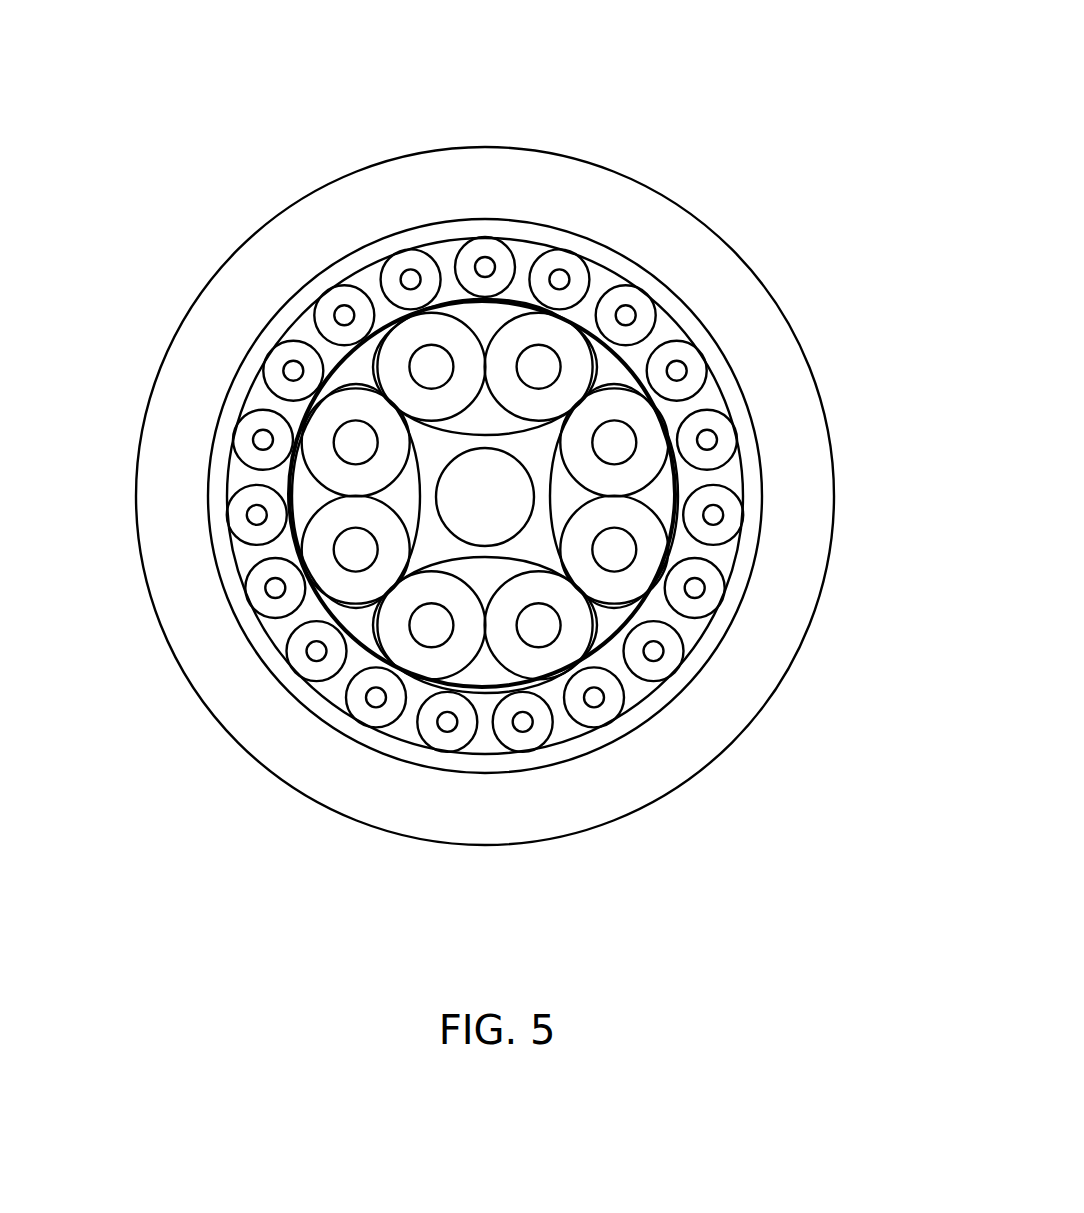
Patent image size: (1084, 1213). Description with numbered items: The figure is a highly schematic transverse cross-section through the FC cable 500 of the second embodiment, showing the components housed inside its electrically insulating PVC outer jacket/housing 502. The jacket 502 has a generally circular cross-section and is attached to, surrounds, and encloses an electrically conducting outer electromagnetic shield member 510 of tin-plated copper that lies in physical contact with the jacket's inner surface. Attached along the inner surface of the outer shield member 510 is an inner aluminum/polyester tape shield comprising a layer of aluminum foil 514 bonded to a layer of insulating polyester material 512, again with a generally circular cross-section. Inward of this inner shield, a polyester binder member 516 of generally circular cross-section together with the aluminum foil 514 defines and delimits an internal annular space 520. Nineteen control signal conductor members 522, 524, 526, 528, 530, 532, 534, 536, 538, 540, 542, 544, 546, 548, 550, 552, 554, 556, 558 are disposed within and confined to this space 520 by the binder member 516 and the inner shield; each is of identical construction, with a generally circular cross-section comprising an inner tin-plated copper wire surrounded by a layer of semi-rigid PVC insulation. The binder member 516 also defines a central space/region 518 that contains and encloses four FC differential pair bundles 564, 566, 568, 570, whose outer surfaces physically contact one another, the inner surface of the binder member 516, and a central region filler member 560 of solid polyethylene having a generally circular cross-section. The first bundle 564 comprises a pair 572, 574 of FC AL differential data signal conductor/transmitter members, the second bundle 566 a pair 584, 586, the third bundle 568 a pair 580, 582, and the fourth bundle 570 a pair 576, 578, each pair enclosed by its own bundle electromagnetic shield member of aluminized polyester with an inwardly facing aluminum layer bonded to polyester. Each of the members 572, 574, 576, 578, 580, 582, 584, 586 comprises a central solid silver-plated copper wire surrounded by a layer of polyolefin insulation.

The cable 500 is at (660, 46).
The outer jacket/housing 502 is at (593, 160).
The outer electromagnetic shield member 510 is at (660, 280).
The layer of insulating polyester material 512 is at (690, 323).
The layer of aluminum foil 514 is at (697, 320).
The binder member 516 is at (625, 352).
The central space/region 518 is at (340, 362).
The internal annular space 520 is at (362, 280).
The control signal conductor member 522 is at (383, 263).
The control signal conductor member 524 is at (320, 303).
The control signal conductor member 526 is at (270, 367).
The control signal conductor member 528 is at (230, 443).
The control signal conductor member 530 is at (230, 528).
The control signal conductor member 532 is at (257, 607).
The control signal conductor member 534 is at (242, 747).
The control signal conductor member 536 is at (373, 718).
The control signal conductor member 538 is at (450, 743).
The control signal conductor member 540 is at (535, 738).
The control signal conductor member 542 is at (615, 710).
The control signal conductor member 544 is at (677, 658).
The control signal conductor member 546 is at (720, 587).
The control signal conductor member 548 is at (737, 508).
The control signal conductor member 550 is at (727, 427).
The control signal conductor member 552 is at (697, 377).
The control signal conductor member 554 is at (673, 307).
The control signal conductor member 556 is at (557, 250).
The control signal conductor member 558 is at (490, 247).
The central region filler member 560 is at (512, 482).
The first FC differential pair bundle 564 is at (307, 668).
The second FC differential pair bundle 566 is at (633, 290).
The third FC differential pair bundle 568 is at (690, 627).
The fourth FC differential pair bundle 570 is at (650, 700).
The FC AL differential data signal conductor/transmitter member 572 is at (308, 428).
The FC AL differential data signal conductor/transmitter member 574 is at (313, 538).
The FC AL differential data signal conductor/transmitter member 576 is at (421, 667).
The FC AL differential data signal conductor/transmitter member 578 is at (541, 670).
The FC AL differential data signal conductor/transmitter member 580 is at (652, 540).
The FC AL differential data signal conductor/transmitter member 582 is at (643, 465).
The FC AL differential data signal conductor/transmitter member 584 is at (531, 337).
The FC AL differential data signal conductor/transmitter member 586 is at (445, 337).